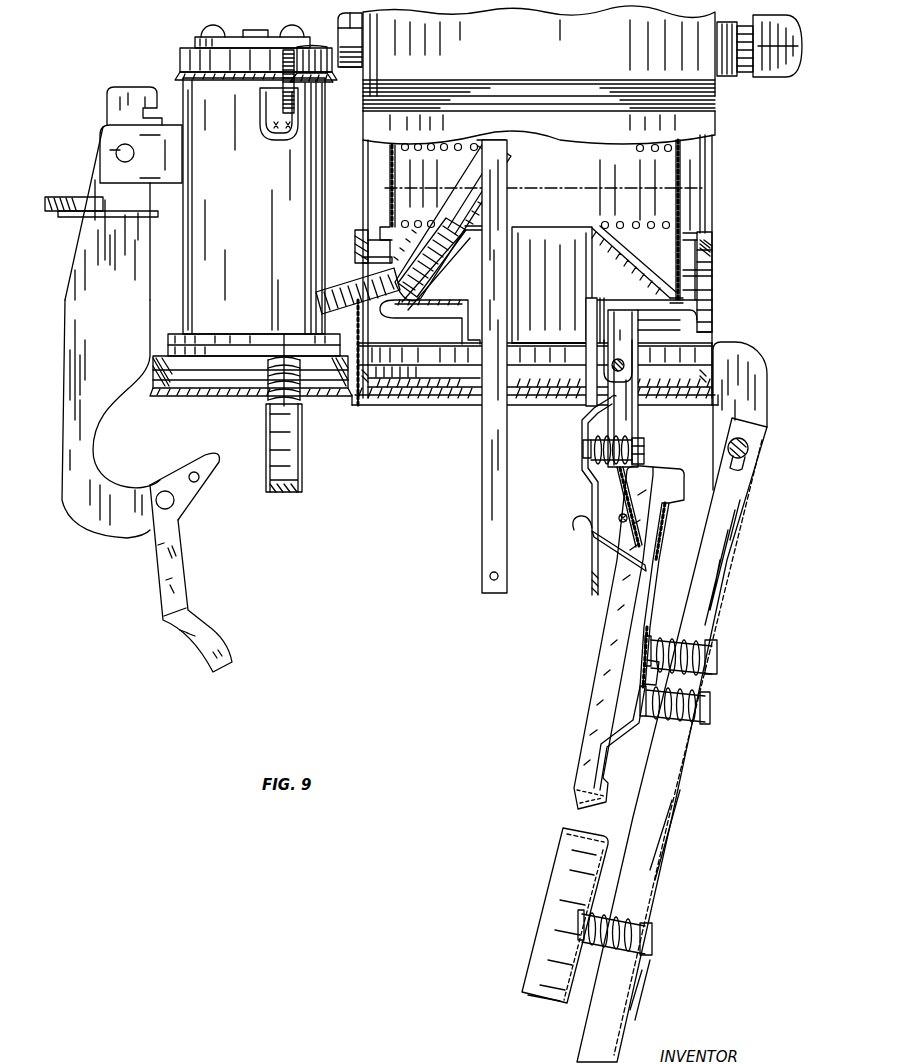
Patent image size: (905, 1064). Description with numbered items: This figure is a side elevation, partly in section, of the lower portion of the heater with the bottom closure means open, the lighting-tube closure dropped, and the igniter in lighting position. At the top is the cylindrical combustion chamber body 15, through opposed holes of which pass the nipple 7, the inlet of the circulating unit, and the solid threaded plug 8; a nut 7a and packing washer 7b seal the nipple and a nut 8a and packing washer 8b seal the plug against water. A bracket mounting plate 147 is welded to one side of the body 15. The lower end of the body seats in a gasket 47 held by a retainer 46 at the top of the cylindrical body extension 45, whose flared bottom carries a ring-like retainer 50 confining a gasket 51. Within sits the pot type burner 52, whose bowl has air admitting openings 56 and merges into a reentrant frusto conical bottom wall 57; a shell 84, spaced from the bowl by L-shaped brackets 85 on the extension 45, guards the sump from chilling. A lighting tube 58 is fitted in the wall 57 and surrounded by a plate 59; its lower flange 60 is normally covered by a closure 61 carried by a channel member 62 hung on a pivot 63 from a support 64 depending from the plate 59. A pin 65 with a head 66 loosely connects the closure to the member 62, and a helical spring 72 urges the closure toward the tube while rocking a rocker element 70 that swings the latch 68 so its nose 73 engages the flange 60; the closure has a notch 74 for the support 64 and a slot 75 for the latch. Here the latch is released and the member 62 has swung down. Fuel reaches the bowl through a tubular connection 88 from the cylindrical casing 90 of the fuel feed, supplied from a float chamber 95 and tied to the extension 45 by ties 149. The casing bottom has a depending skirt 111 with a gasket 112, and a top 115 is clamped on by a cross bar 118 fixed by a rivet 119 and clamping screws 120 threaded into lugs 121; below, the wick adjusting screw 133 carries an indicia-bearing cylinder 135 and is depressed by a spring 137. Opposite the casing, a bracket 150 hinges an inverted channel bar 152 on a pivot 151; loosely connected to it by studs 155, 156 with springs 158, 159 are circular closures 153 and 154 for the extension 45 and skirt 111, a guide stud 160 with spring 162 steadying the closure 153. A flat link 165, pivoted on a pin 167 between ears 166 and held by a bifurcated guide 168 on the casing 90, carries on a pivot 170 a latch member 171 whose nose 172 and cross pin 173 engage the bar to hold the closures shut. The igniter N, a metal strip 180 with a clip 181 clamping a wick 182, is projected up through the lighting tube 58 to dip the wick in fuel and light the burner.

The nipple 7 is at (772, 76).
The nut 7a is at (740, 78).
The packing washer 7b is at (724, 80).
The plug 8 is at (340, 40).
The nut 8a is at (344, 17).
The packing washer 8b is at (362, 86).
The combustion chamber body 15 is at (572, 49).
The body extension 45 is at (705, 322).
The retainer 46 is at (690, 233).
The gasket 47 is at (712, 248).
The ring-like retainer 50 is at (413, 381).
The gasket 51 is at (362, 403).
The pot type burner 52 is at (679, 156).
The air admitting openings 56 is at (608, 150).
The frusto conical bottom wall 57 is at (627, 270).
The lighting tube 58 is at (571, 229).
The plate 59 is at (625, 302).
The flange 60 is at (463, 333).
The closure 61 is at (590, 486).
The member 62 is at (626, 404).
The pivot 63 is at (624, 362).
The support 64 is at (637, 328).
The pin 65 is at (642, 444).
The head 66 is at (644, 456).
The latch 68 is at (628, 553).
The rocker element 70 is at (597, 407).
The helical spring 72 is at (583, 447).
The nose 73 is at (585, 530).
The notch 74 is at (597, 352).
The slot 75 is at (592, 568).
The shell 84 is at (705, 268).
The L-shaped bracket 85 is at (707, 295).
The tubular connection 88 is at (318, 297).
The casing 90 is at (275, 240).
The float chamber 95 is at (68, 232).
The skirt 111 is at (152, 396).
The gasket 112 is at (180, 362).
The top 115 is at (182, 62).
The cross bar 118 is at (238, 37).
The rivet 119 is at (292, 36).
The clamping screws 120 is at (211, 33).
The lugs 121 is at (262, 110).
The wick adjusting screw 133 is at (262, 398).
The cylinder 135 is at (300, 446).
The spring 137 is at (272, 415).
The bracket mounting plate 147 is at (690, 181).
The ties 149 is at (334, 262).
The bracket 150 is at (752, 382).
The pivot 151 is at (747, 448).
The inverted channel bar 152 is at (735, 520).
The closure 153 is at (638, 622).
The closure 154 is at (554, 880).
The stud 155 is at (690, 636).
The stud 156 is at (652, 938).
The spring 158 is at (711, 646).
The spring 159 is at (627, 916).
The guide stud 160 is at (700, 716).
The spring 162 is at (690, 738).
The link 165 is at (90, 350).
The ears 166 is at (158, 181).
The pin 167 is at (125, 163).
The bifurcated guide 168 is at (112, 307).
The pivot 170 is at (176, 503).
The latch member 171 is at (175, 557).
The nose 172 is at (219, 457).
The cross pin 173 is at (199, 479).
The metal strip 180 is at (487, 433).
The metal clip 181 is at (488, 162).
The wick 182 is at (440, 210).
The igniter N is at (487, 499).